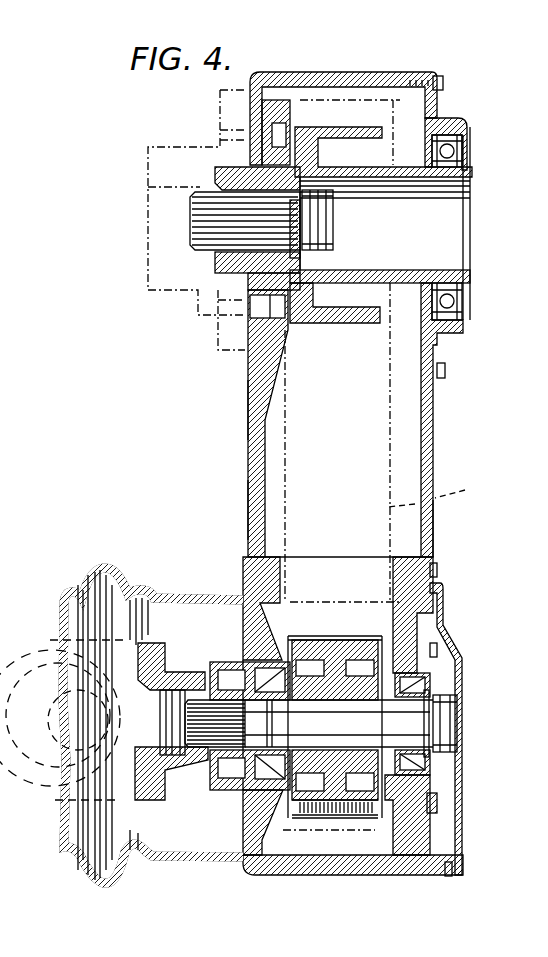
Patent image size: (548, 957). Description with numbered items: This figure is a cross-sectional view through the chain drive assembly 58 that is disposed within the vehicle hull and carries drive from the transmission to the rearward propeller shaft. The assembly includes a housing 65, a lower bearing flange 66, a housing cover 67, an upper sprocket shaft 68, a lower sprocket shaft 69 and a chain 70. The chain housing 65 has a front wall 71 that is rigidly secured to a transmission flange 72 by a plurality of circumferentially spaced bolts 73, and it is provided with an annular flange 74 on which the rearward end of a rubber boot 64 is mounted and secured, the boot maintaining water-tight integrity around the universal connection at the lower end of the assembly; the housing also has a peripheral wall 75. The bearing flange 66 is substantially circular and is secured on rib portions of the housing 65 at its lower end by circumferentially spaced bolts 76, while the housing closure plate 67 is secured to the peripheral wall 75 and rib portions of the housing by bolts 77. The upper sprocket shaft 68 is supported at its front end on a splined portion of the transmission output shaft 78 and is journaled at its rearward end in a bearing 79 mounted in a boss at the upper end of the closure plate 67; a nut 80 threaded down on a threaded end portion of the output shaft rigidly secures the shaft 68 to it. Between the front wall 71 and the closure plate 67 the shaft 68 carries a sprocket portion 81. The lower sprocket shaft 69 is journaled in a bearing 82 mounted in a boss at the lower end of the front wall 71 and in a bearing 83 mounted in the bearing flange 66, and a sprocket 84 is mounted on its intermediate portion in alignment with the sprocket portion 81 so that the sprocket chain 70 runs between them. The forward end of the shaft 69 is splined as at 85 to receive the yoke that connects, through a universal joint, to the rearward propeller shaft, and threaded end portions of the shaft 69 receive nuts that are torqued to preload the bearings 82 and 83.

The chain drive assembly 58 is at (446, 461).
The rubber boot 64 is at (163, 857).
The housing 65 is at (243, 413).
The lower bearing flange 66 is at (433, 835).
The housing cover 67 is at (438, 534).
The upper sprocket shaft 68 is at (451, 249).
The lower sprocket shaft 69 is at (410, 728).
The chain 70 is at (441, 492).
The front wall 71 is at (253, 507).
The transmission flange 72 is at (213, 348).
The bolts 73 is at (193, 315).
The annular flange 74 is at (228, 857).
The peripheral wall 75 is at (333, 870).
The bolts 76 is at (433, 802).
The bolts 77 is at (444, 84).
The transmission output shaft 78 is at (148, 260).
The bearing 79 is at (464, 309).
The nut 80 is at (320, 238).
The sprocket portion 81 is at (335, 324).
The bearing 82 is at (237, 783).
The bearing 83 is at (433, 688).
The sprocket 84 is at (353, 638).
The splined portion 85 is at (193, 705).